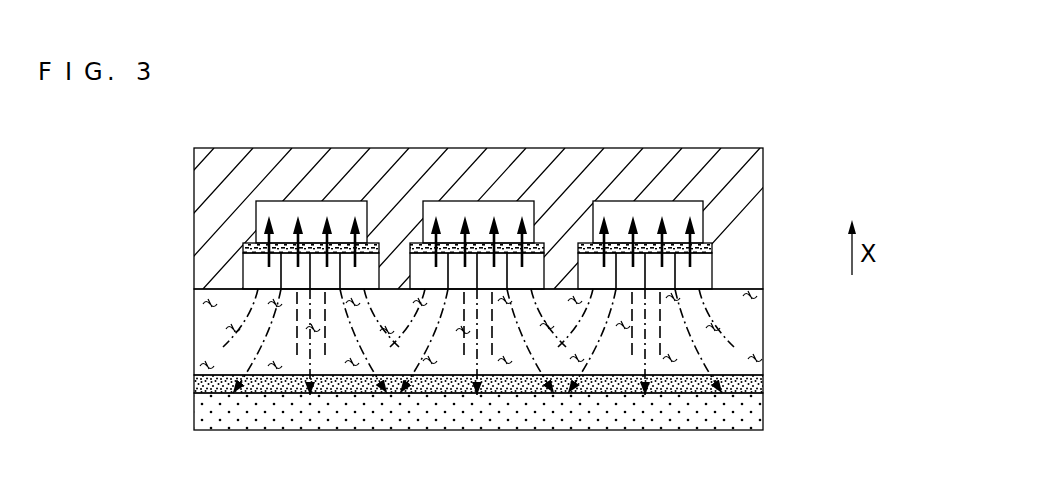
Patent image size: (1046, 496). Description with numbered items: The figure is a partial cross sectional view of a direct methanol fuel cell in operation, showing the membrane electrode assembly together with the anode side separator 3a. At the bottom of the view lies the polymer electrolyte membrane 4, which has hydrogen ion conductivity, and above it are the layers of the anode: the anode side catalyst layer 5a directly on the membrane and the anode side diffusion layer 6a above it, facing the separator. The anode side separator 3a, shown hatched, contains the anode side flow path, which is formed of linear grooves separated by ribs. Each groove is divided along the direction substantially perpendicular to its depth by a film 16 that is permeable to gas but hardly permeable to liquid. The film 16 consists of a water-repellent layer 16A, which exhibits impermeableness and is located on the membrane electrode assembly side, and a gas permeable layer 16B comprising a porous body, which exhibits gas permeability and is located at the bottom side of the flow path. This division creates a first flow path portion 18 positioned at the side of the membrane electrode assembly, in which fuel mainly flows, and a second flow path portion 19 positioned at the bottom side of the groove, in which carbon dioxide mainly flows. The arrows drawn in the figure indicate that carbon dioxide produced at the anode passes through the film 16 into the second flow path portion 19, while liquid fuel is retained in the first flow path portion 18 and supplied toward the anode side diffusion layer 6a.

The anode side separator 3a is at (727, 203).
The second flow path portion 19 is at (688, 207).
The first flow path portion 18 is at (705, 267).
The film 16 is at (235, 297).
The water-repellent layer 16A is at (243, 268).
The gas permeable layer 16B is at (243, 248).
The anode side diffusion layer 6a is at (763, 314).
The anode side catalyst layer 5a is at (763, 385).
The polymer electrolyte membrane 4 is at (763, 412).